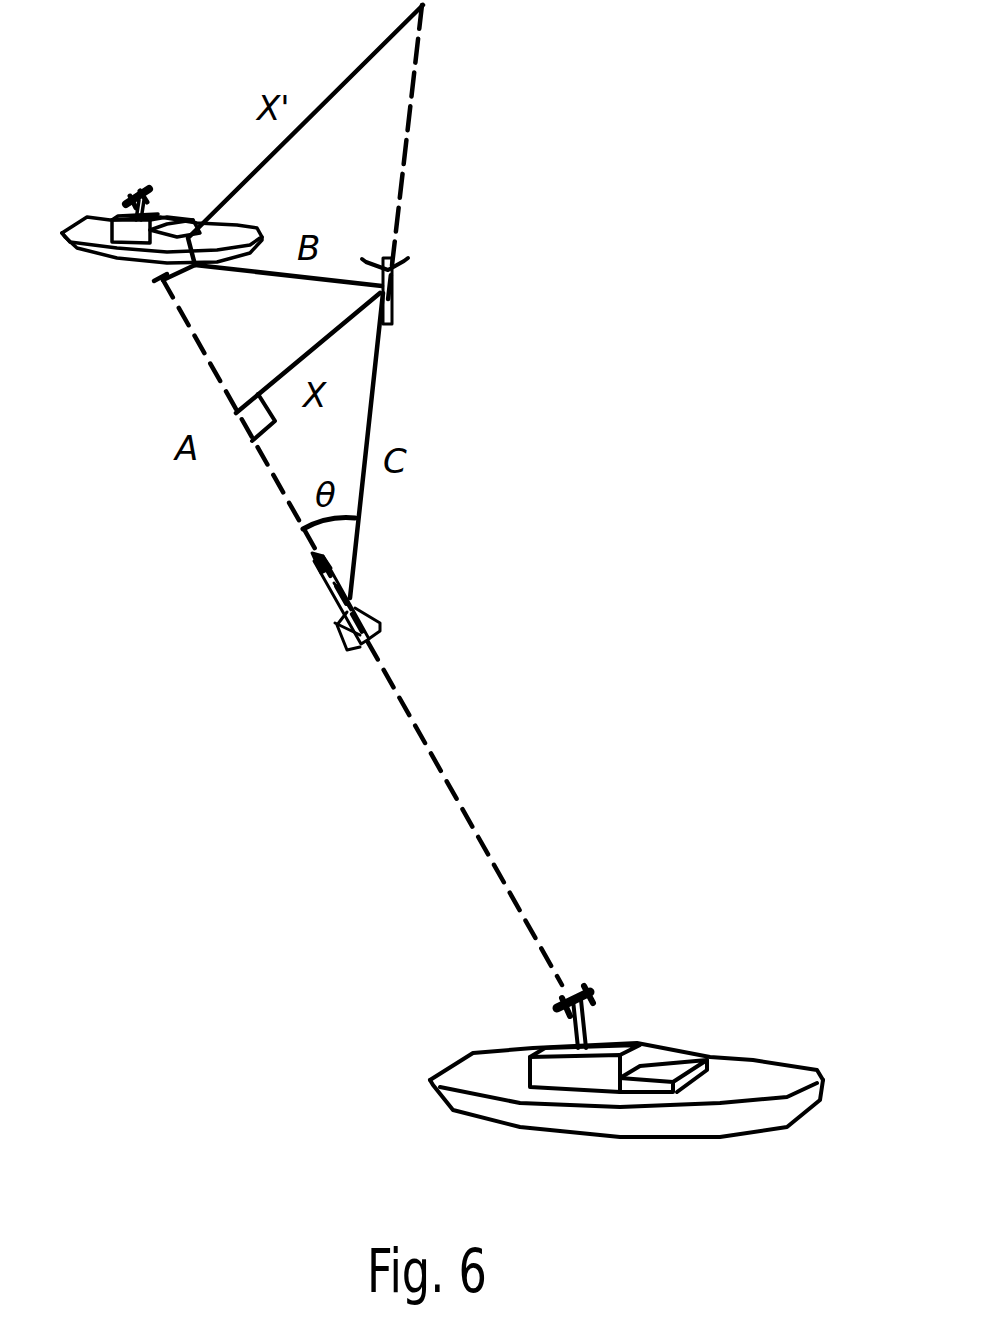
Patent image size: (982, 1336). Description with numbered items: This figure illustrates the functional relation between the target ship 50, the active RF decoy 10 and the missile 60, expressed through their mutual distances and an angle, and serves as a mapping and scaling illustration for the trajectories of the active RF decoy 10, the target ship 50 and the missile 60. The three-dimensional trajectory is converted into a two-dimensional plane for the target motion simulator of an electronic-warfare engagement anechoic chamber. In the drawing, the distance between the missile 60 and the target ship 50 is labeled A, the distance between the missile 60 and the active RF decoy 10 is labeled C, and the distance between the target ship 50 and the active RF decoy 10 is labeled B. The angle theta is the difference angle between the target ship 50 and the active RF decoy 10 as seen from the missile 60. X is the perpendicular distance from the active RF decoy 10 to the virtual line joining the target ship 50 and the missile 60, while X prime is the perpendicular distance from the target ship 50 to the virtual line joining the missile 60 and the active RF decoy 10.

The active RF decoy 10 is at (405, 294).
The target ship 50 is at (98, 200).
The missile 60 is at (377, 603).